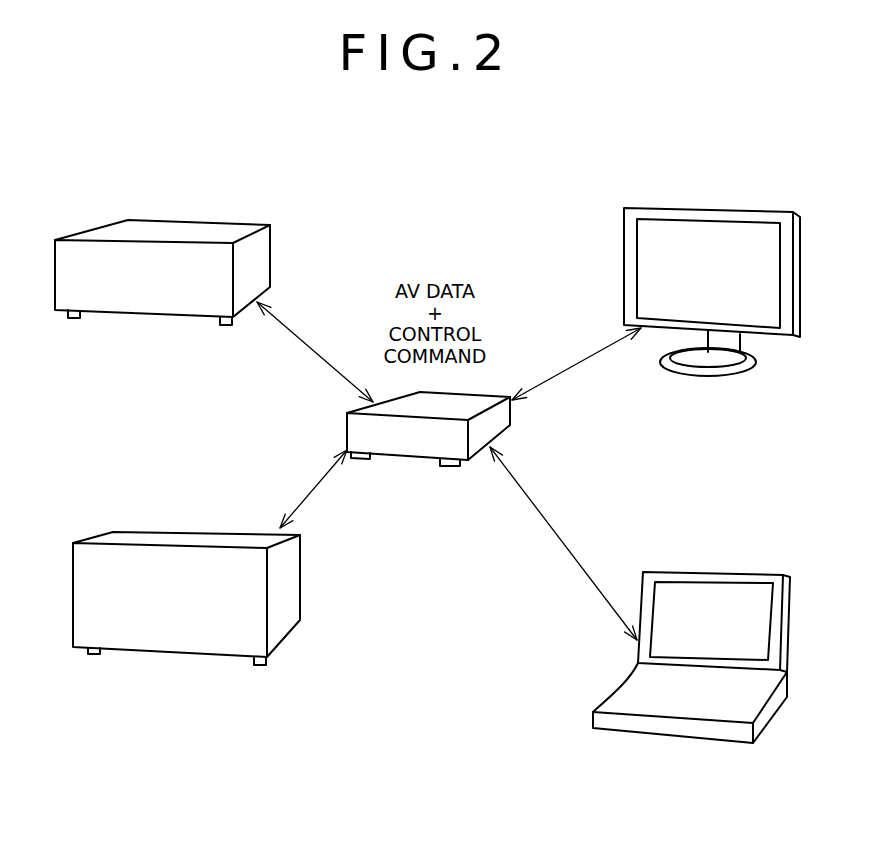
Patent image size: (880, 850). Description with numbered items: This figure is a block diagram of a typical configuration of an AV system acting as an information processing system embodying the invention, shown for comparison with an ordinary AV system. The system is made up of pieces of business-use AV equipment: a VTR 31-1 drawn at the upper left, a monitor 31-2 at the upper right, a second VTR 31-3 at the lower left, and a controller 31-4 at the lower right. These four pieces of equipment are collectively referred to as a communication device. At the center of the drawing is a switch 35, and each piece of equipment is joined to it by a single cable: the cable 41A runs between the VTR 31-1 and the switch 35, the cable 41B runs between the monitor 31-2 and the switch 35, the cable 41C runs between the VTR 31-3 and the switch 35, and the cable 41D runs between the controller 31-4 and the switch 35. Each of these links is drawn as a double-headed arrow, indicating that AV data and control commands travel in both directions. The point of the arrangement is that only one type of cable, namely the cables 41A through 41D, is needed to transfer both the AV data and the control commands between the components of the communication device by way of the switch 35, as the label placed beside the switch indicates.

The VTR 31-1 is at (188, 222).
The monitor 31-2 is at (710, 208).
The VTR 31-3 is at (187, 654).
The controller 31-4 is at (690, 741).
The switch 35 is at (408, 466).
The cable 41A is at (328, 365).
The cable 41B is at (563, 377).
The cable 41C is at (317, 485).
The cable 41D is at (557, 530).